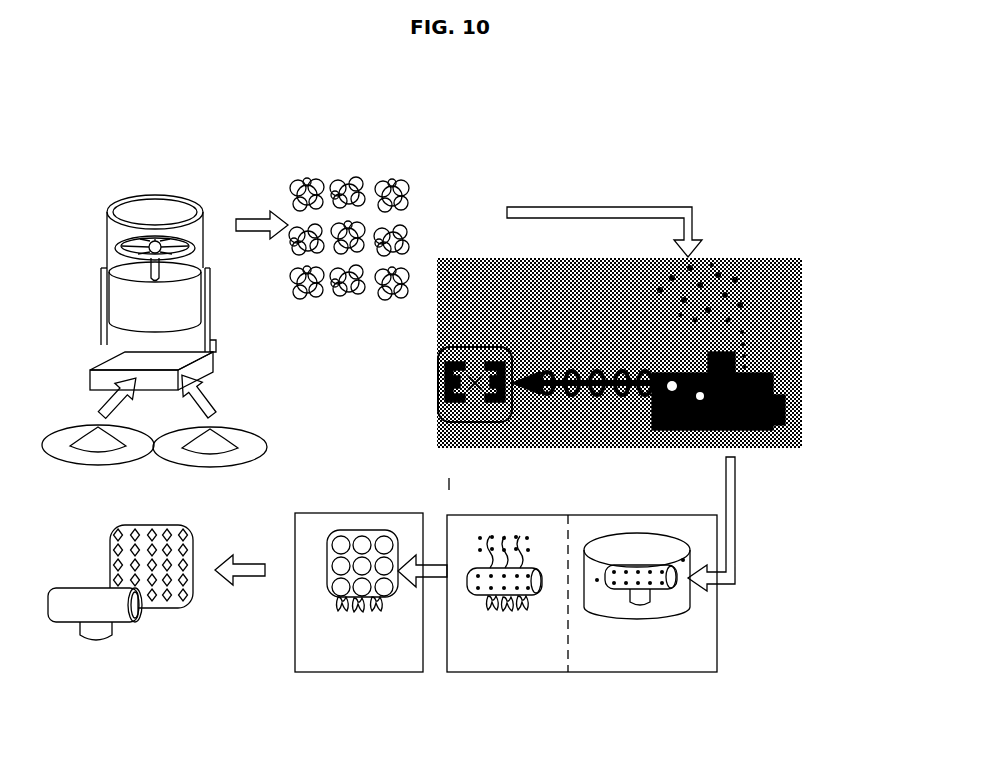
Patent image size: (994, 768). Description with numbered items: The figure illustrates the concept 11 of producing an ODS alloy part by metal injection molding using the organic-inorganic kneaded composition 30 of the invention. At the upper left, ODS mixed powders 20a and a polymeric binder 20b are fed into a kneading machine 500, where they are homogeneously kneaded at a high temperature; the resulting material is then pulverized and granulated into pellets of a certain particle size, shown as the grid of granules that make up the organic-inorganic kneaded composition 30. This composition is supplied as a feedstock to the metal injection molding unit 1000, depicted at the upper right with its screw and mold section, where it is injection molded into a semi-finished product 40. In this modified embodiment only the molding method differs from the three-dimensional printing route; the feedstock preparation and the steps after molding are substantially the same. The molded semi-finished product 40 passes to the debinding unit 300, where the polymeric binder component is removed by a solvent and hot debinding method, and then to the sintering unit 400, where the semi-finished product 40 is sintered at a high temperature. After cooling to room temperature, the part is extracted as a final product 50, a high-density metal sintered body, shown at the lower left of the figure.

The concept of performing injection molding 11 is at (428, 159).
The ODS mixed powders 20a is at (82, 456).
The polymeric binder 20b is at (205, 457).
The organic-inorganic kneaded composition 30 is at (347, 300).
The semi-finished product 40 is at (632, 562).
The final product 50 is at (145, 615).
The debinding unit 300 is at (676, 512).
The sintering unit 400 is at (355, 513).
The kneading machine 500 is at (210, 296).
The metal injection molding unit 1000 is at (793, 361).